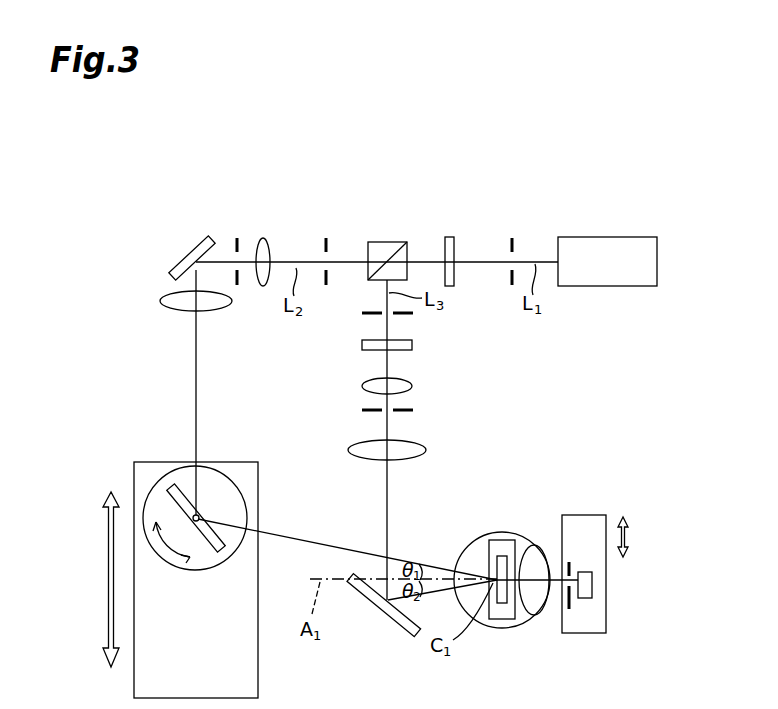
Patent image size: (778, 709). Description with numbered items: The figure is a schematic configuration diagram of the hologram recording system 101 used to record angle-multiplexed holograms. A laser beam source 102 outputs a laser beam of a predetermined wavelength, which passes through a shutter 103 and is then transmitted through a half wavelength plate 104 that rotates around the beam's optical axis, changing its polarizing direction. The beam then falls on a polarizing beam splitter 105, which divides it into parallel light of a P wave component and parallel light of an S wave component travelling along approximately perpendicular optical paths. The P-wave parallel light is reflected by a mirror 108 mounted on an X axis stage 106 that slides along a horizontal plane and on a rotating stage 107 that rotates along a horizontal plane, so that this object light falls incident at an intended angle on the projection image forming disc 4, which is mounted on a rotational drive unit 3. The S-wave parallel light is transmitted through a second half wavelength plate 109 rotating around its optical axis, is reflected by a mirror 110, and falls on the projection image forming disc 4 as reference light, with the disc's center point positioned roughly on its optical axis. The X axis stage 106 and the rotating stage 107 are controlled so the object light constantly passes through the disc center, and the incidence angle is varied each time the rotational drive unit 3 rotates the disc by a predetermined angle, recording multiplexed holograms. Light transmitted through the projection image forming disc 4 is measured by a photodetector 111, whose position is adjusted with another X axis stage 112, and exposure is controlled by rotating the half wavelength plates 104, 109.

The hologram recording system 101 is at (622, 152).
The laser beam source 102 is at (604, 245).
The shutter 103 is at (509, 240).
The half wavelength plate 104 is at (449, 242).
The polarizing beam splitter 105 is at (382, 248).
The X axis stage 106 is at (240, 665).
The rotating stage 107 is at (178, 483).
The mirror 108 is at (235, 545).
The half wavelength plate 109 is at (412, 343).
The mirror 110 is at (395, 622).
The photodetector 111 is at (592, 585).
The X axis stage 112 is at (588, 633).
The rotational drive unit 3 is at (491, 545).
The projection image forming disc 4 is at (501, 600).